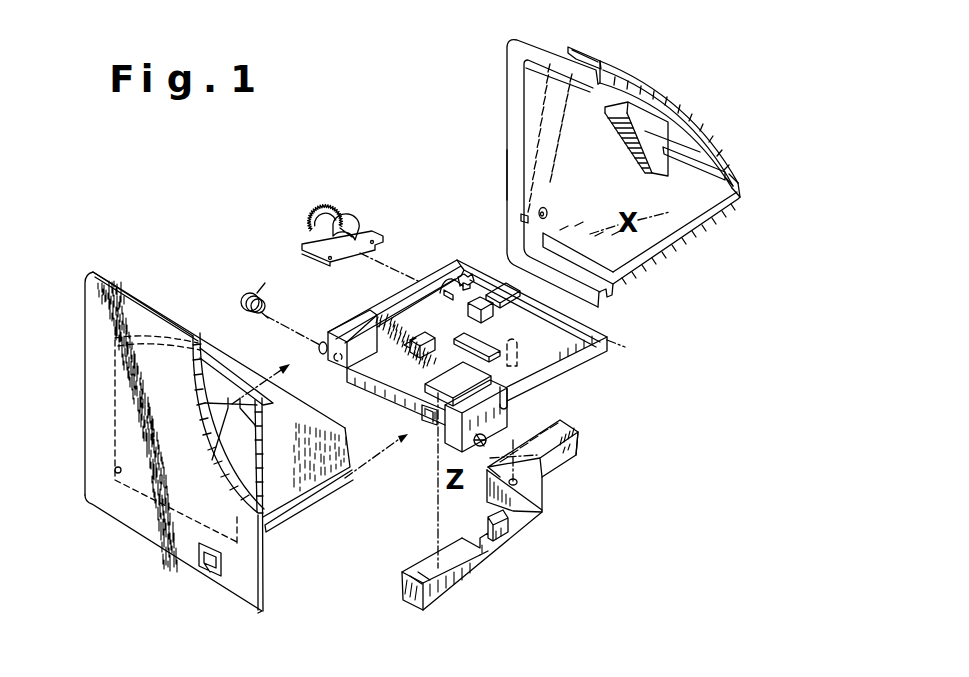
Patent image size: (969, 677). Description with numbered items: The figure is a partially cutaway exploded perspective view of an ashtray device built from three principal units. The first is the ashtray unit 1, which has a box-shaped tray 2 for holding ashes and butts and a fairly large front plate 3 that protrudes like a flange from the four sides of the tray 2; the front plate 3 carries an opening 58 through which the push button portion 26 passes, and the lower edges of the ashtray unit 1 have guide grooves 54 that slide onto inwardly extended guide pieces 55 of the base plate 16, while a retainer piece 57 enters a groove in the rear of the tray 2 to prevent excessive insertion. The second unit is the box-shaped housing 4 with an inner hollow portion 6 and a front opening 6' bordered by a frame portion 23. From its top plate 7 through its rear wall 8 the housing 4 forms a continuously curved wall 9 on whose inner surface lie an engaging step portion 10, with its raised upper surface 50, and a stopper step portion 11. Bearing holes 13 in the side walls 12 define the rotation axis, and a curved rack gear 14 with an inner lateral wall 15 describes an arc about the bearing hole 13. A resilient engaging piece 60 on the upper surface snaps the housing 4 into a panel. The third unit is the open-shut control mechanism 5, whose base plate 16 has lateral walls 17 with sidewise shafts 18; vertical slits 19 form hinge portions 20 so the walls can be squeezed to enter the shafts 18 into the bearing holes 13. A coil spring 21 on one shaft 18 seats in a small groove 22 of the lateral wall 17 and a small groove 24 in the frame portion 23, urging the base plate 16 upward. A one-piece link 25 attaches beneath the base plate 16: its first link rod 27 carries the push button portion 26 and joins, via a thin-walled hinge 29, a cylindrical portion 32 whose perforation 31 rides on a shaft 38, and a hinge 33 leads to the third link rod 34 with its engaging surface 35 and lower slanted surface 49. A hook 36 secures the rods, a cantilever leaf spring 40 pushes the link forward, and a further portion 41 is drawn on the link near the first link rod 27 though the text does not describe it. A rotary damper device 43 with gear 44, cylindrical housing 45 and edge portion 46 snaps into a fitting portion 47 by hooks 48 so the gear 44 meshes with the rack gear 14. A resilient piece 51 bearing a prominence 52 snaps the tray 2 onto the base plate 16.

The ashtray unit 1 is at (217, 303).
The tray 2 is at (227, 362).
The front plate 3 is at (182, 328).
The housing 4 is at (676, 265).
The open-shut control mechanism 5 is at (621, 359).
The inner hollow portion 6 is at (648, 238).
The front opening 6' is at (520, 83).
The top plate 7 is at (684, 108).
The rear wall 8 is at (726, 156).
The curved wall 9 is at (768, 98).
The engaging step portion 10 is at (736, 197).
The stopper step portion 11 is at (706, 135).
The side walls 12 is at (540, 130).
The bearing holes 13 is at (546, 212).
The curved rack gear 14 is at (643, 170).
The inner lateral wall 15 is at (643, 128).
The base plate 16 is at (536, 335).
The lateral walls 17 is at (393, 307).
The shafts 18 is at (319, 347).
The vertical slits 19 is at (367, 323).
The hinge portions 20 is at (508, 404).
The coil spring 21 is at (244, 294).
The small groove 22 is at (339, 366).
The frame portion 23 is at (517, 167).
The small groove 24 is at (521, 217).
The link 25 is at (467, 593).
The push button portion 26 is at (403, 598).
The first link rod 27 is at (428, 562).
The thin-walled hinge 29 is at (540, 520).
The perforation 31 is at (530, 493).
The cylindrical portion 32 is at (520, 483).
The hinge 33 is at (486, 478).
The third link rod 34 is at (565, 450).
The engaging surface 35 is at (572, 424).
The hook 36 is at (440, 414).
The shaft 38 is at (518, 347).
The cantilever leaf spring 40 is at (492, 348).
The step 41 is at (496, 555).
The rotary damper device 43 is at (336, 202).
The gear 44 is at (316, 207).
The cylindrical housing 45 is at (349, 228).
The edge portion 46 is at (303, 252).
The fitting portion 47 is at (433, 289).
The hooks 48 is at (460, 278).
The lower slanted surface 49 is at (578, 437).
The raised upper surface 50 is at (735, 176).
The resilient piece 51 is at (432, 341).
The prominence 52 is at (427, 368).
The guide grooves 54 is at (116, 468).
The guide pieces 55 is at (345, 333).
The retainer piece 57 is at (475, 297).
The opening 58 is at (208, 567).
The resilient engaging piece 60 is at (603, 67).